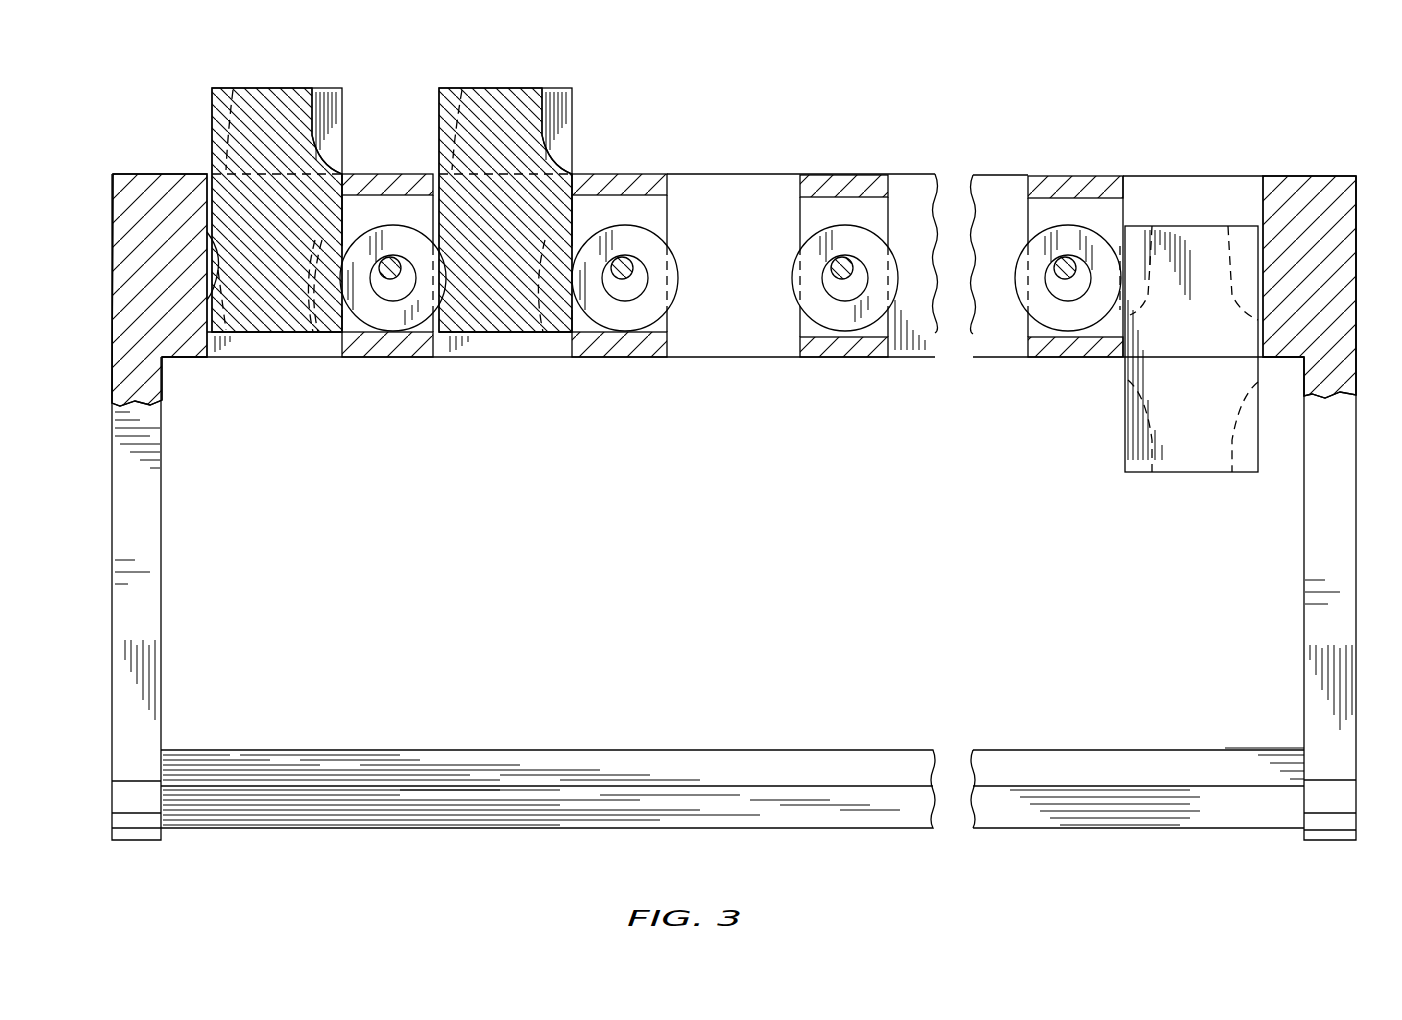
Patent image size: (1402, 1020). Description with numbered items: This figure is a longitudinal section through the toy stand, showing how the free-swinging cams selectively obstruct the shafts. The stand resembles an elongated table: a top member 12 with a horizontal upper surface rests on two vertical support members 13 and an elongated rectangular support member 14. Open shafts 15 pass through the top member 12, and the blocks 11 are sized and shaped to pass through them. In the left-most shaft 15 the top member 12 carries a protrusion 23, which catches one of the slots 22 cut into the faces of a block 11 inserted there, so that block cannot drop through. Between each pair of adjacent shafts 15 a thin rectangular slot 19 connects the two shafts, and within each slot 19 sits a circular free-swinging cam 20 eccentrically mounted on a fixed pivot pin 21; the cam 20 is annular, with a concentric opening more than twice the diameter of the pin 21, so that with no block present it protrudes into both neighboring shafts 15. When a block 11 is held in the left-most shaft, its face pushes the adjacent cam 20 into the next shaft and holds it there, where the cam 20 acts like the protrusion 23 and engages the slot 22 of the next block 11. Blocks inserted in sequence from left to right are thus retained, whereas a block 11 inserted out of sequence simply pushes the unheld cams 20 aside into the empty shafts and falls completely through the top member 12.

The block 11 is at (281, 88).
The top member 12 is at (405, 182).
The vertical support member 13 is at (112, 540).
The elongated rectangular support member 14 is at (705, 760).
The shaft 15 is at (275, 345).
The thin rectangular slot 19 is at (357, 322).
The circular free-swinging cam 20 is at (400, 310).
The fixed pivot pin 21 is at (392, 262).
The slot 22 is at (228, 118).
The protrusion 23 is at (225, 262).